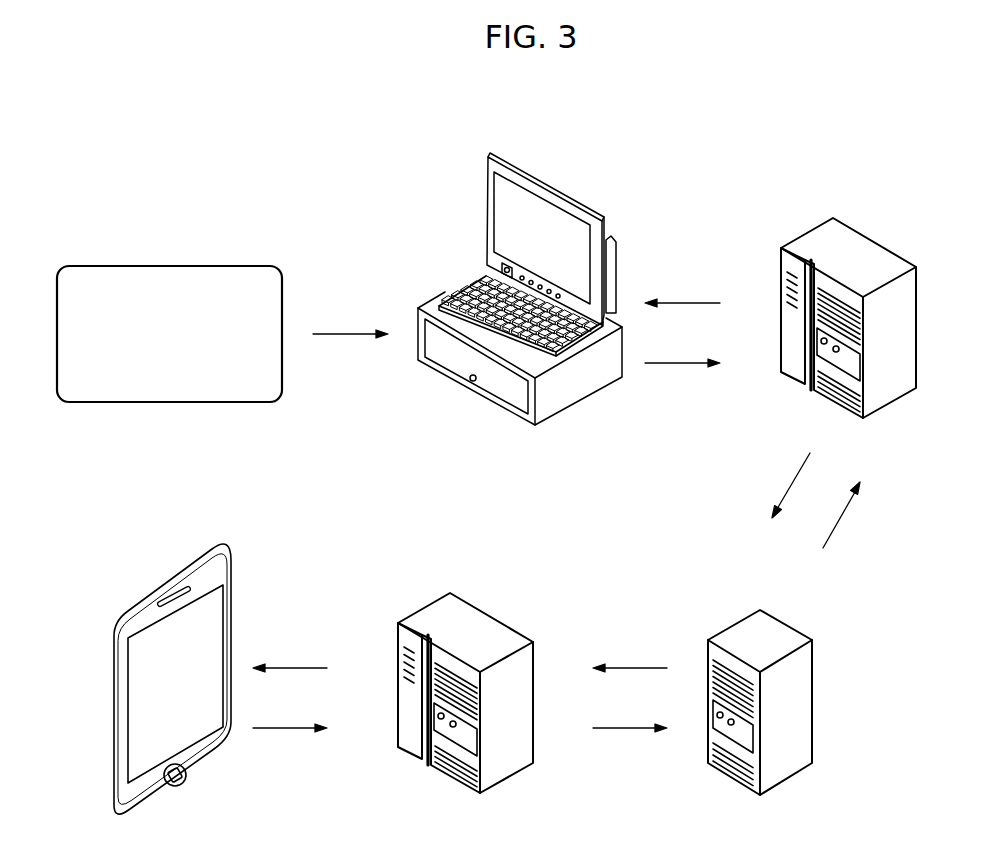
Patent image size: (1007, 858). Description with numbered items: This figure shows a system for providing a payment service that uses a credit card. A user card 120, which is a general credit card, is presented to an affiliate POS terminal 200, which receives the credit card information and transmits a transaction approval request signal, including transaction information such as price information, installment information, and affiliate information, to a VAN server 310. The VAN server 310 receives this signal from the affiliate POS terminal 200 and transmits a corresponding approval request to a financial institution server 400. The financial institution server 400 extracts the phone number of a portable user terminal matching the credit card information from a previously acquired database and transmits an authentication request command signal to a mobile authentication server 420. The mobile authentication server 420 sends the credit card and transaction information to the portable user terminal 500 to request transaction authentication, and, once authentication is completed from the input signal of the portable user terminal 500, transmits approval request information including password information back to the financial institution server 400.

The user card 120 is at (168, 266).
The affiliate POS terminal 200 is at (560, 195).
The VAN server 310 is at (875, 237).
The financial institution server 400 is at (733, 623).
The mobile authentication server 420 is at (492, 615).
The portable user terminal 500 is at (170, 567).